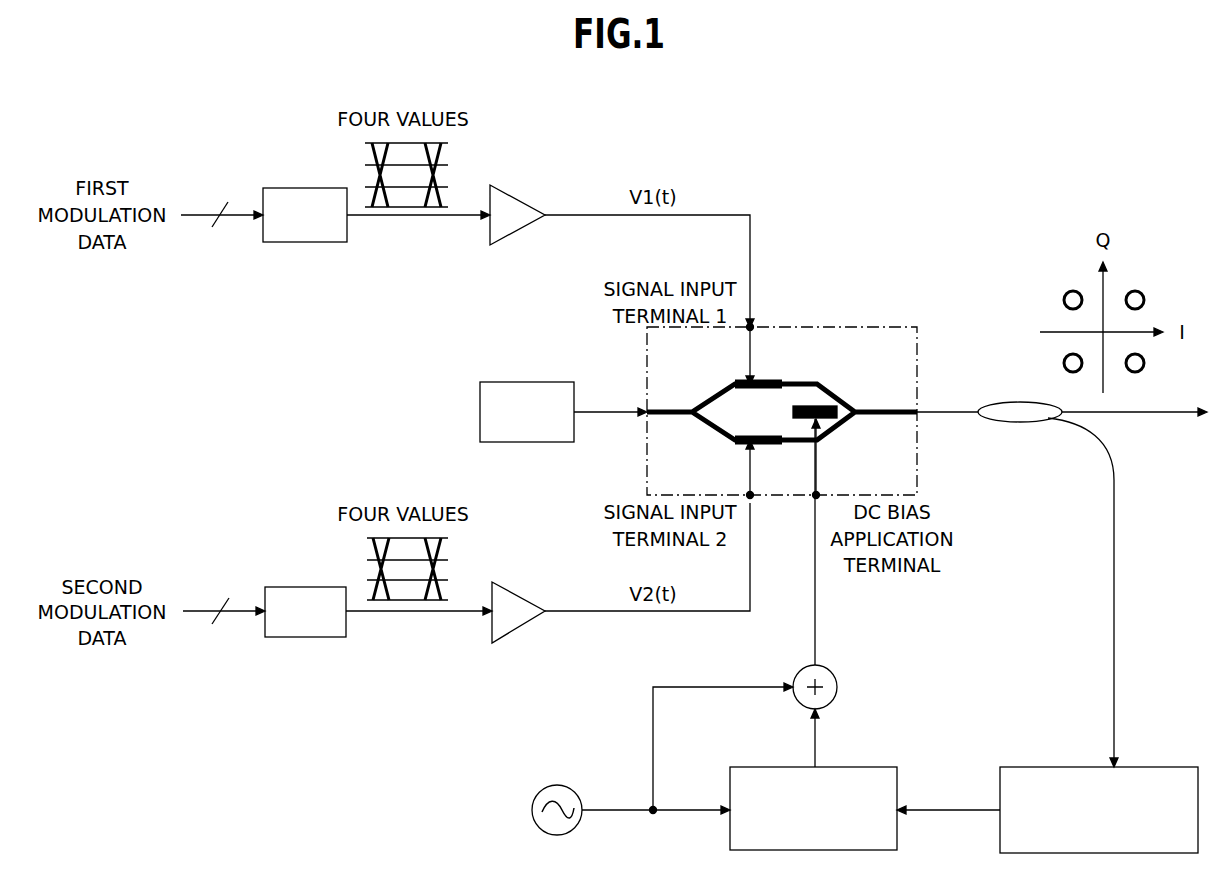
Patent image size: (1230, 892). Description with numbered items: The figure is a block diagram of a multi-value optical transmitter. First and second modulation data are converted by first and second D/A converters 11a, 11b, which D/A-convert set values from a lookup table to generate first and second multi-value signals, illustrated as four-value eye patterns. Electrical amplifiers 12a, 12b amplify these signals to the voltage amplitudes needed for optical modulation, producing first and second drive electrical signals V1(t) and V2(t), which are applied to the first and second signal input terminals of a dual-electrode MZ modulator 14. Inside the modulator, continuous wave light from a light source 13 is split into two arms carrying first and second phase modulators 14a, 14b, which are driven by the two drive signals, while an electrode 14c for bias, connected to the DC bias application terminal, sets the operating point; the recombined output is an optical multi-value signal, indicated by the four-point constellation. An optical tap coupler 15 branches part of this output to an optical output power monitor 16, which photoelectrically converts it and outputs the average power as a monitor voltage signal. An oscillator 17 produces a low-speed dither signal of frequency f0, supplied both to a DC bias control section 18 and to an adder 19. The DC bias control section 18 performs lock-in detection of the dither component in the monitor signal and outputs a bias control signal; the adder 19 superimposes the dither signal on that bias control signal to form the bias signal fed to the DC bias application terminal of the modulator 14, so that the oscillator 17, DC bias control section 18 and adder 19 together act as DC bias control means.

The first D/A converter 11a is at (300, 188).
The second D/A converter 11b is at (300, 587).
The first electrical amplifier 12a is at (506, 190).
The second electrical amplifier 12b is at (505, 588).
The light source 13 is at (480, 400).
The dual-electrode MZ modulator 14 is at (880, 327).
The first phase modulator 14a is at (740, 382).
The second phase modulator 14b is at (740, 442).
The electrode for bias 14c is at (838, 426).
The optical tap coupler 15 is at (1010, 402).
The optical output power monitor 16 is at (1157, 767).
The oscillator 17 is at (532, 803).
The DC bias control section 18 is at (877, 767).
The adder 19 is at (832, 670).